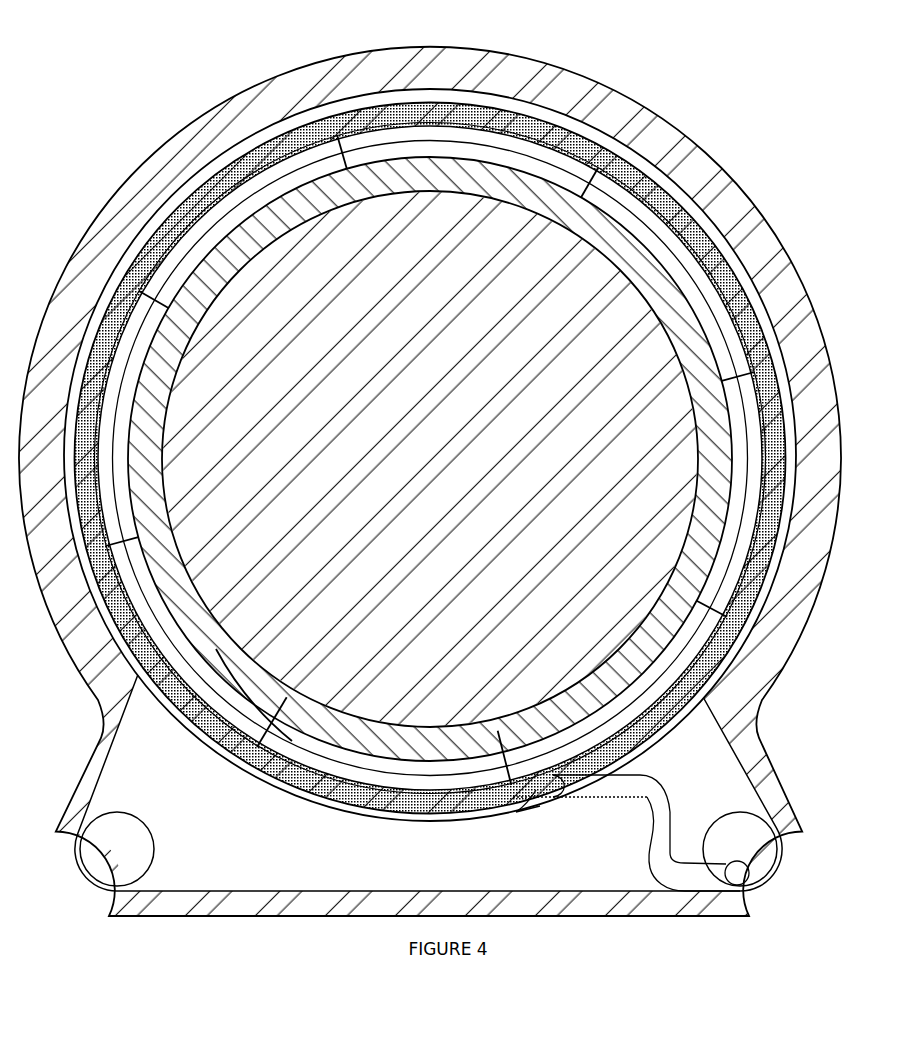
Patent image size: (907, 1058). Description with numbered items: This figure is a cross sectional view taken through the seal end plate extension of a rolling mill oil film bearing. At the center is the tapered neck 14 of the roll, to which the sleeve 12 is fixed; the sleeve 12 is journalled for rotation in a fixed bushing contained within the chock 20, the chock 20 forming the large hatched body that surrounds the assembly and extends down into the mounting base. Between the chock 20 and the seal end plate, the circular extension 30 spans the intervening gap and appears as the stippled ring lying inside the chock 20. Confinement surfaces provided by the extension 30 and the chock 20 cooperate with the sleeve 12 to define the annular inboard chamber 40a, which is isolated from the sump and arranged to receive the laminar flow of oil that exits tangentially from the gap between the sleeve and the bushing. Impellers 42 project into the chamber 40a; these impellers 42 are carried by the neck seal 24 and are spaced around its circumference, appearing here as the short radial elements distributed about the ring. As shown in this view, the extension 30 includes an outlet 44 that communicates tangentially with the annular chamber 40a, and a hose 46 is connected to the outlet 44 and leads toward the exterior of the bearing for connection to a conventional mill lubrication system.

The chock 20 is at (800, 612).
The circular extension 30 is at (780, 462).
The neck seal 24 is at (687, 274).
The sleeve 12 is at (712, 440).
The tapered neck 14 is at (449, 455).
The annular inboard chamber 40a is at (225, 693).
The impellers 42 is at (346, 169).
The outlet 44 is at (532, 788).
The hose 46 is at (663, 792).